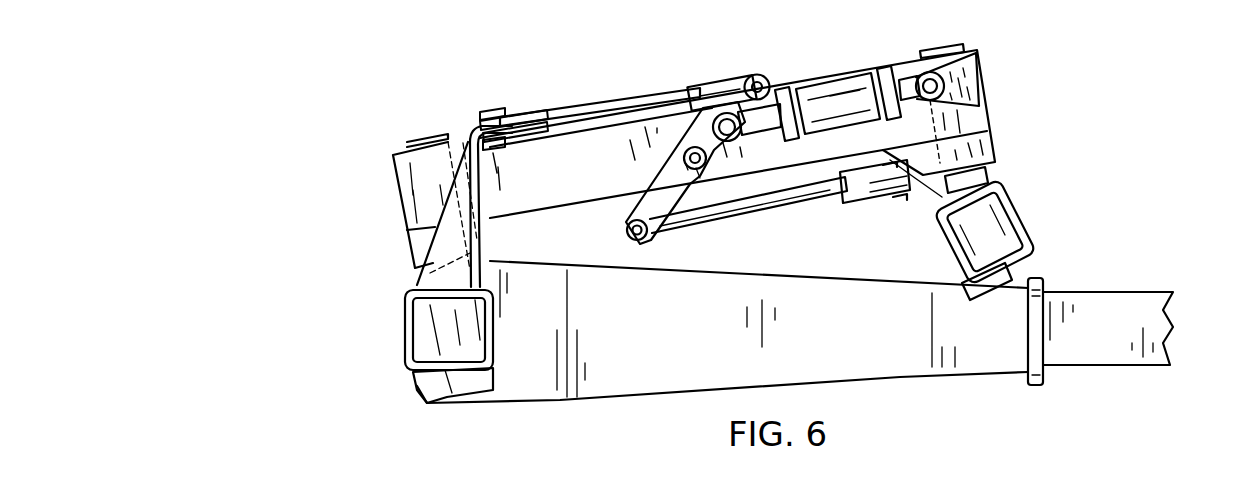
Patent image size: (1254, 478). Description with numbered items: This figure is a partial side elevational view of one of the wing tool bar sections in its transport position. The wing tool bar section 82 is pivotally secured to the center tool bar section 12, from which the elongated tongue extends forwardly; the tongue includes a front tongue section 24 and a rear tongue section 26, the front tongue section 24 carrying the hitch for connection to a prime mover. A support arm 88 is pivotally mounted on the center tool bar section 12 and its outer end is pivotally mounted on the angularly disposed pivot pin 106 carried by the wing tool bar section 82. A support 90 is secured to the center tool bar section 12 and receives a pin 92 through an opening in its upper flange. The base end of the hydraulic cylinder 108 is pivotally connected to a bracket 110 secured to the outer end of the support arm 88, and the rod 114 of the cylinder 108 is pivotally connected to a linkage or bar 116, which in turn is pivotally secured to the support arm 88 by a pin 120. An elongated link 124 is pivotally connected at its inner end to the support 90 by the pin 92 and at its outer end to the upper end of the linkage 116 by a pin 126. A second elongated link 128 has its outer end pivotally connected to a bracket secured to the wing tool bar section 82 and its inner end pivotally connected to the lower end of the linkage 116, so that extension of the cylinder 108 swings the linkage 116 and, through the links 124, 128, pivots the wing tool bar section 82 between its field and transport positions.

The center tool bar section 12 is at (395, 316).
The front tongue section 24 is at (1113, 312).
The rear tongue section 26 is at (790, 293).
The wing tool bar section 82 is at (1040, 210).
The support arm 88 is at (578, 177).
The support 90 is at (467, 210).
The pin 92 is at (497, 115).
The pivot pin 106 is at (948, 45).
The hydraulic cylinder 108 is at (840, 93).
The bracket 110 is at (953, 70).
The rod 114 is at (777, 83).
The linkage 116 is at (630, 208).
The pin 120 is at (683, 150).
The elongated link 124 is at (613, 107).
The pin 126 is at (752, 87).
The elongated link 128 is at (813, 203).